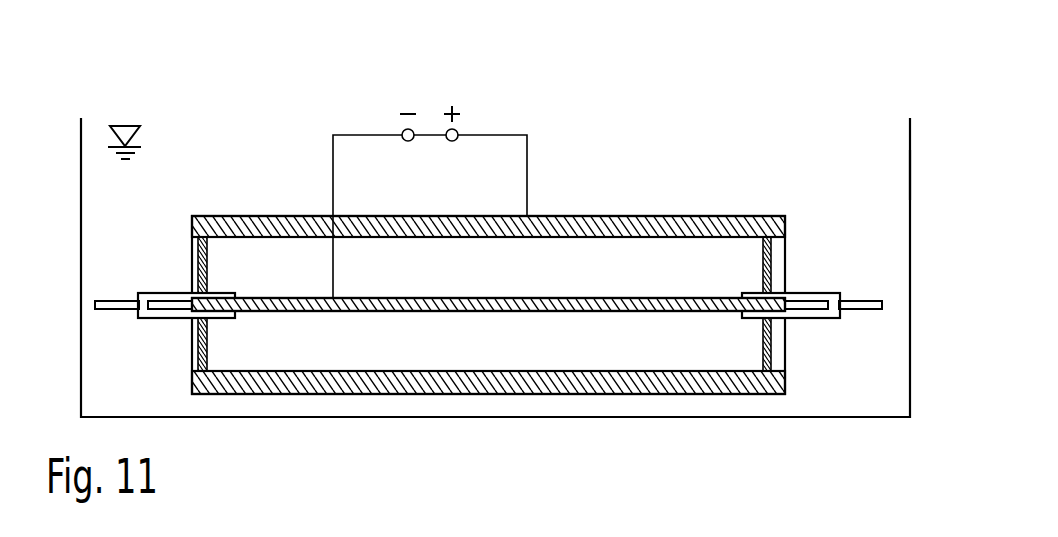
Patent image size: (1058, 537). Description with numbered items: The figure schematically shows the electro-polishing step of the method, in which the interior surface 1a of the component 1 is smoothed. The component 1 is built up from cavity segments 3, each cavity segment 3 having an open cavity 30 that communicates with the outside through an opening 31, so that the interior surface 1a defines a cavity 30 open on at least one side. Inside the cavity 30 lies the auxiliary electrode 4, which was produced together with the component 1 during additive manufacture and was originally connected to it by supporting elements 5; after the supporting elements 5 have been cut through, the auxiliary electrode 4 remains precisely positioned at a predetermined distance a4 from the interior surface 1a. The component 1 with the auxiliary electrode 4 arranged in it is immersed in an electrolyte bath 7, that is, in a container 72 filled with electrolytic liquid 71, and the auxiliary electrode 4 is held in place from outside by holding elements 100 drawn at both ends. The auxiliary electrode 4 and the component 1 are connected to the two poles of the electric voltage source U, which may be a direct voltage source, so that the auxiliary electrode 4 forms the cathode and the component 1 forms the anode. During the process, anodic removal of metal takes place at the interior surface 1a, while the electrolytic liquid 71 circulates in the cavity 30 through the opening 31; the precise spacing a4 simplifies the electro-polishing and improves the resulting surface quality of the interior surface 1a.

The component 1 is at (727, 173).
The interior surface 1a is at (262, 247).
The cavity segment 3 is at (633, 215).
The cavity 30 is at (492, 276).
The opening 31 is at (776, 372).
The auxiliary electrode 4 is at (430, 312).
The supporting elements 5 is at (197, 258).
The electrolyte bath 7 is at (80, 219).
The electrolytic liquid 71 is at (146, 147).
The container 72 is at (909, 172).
The clamp holder 100 is at (124, 328).
The predetermined distance a4 is at (661, 237).
The electric voltage source U is at (477, 105).